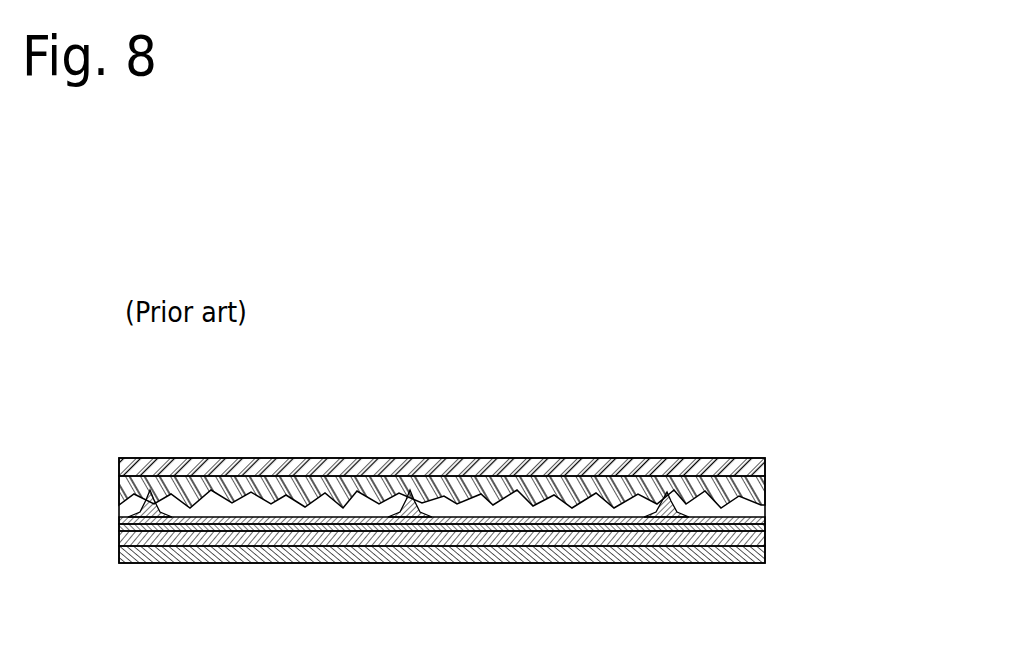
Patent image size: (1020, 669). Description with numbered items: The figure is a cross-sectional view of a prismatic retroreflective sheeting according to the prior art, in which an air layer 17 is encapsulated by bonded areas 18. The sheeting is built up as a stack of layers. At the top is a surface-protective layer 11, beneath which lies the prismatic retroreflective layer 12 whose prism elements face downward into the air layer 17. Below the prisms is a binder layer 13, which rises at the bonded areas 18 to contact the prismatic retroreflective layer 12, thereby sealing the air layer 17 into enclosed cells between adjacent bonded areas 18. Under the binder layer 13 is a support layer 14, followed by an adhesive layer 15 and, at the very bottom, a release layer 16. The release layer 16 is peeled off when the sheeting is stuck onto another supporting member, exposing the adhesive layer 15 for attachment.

The surface-protective layer 11 is at (520, 404).
The prismatic retroreflective layer 12 is at (521, 454).
The binder layer 13 is at (521, 497).
The support layer 14 is at (521, 533).
The adhesive layer 15 is at (521, 560).
The release layer 16 is at (521, 591).
The air layer 17 is at (442, 549).
The bonded areas 18 is at (408, 425).